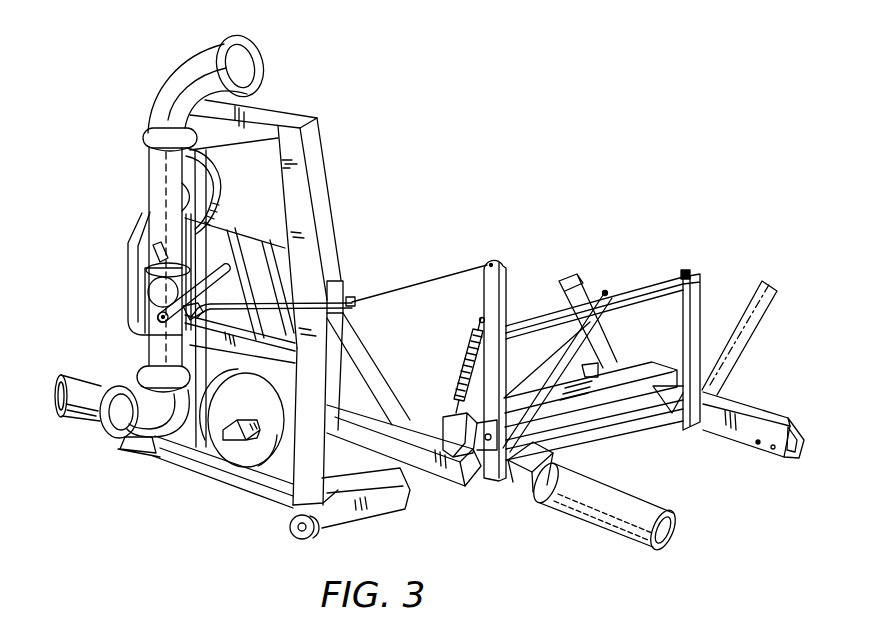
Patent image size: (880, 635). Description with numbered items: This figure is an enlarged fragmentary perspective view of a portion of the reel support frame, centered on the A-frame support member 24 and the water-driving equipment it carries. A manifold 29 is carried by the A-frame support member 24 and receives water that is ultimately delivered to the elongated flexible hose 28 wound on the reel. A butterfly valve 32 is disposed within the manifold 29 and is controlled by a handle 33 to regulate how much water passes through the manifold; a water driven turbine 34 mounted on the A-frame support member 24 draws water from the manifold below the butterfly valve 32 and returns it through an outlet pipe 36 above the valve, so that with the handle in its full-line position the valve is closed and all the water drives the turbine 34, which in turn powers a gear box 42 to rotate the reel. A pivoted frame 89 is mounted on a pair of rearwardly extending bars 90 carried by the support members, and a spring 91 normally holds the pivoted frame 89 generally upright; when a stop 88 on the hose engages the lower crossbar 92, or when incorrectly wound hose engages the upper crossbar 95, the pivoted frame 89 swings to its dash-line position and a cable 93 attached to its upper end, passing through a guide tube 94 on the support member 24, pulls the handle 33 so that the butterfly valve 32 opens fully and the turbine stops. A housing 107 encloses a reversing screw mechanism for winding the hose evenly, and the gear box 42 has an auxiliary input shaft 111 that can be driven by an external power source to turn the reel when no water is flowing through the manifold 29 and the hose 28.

The A-frame support member 24 is at (317, 160).
The flexible hose 28 is at (617, 530).
The manifold 29 is at (158, 233).
The butterfly valve 32 is at (145, 287).
The handle 33 is at (147, 268).
The water driven turbine 34 is at (217, 193).
The outlet pipe 36 is at (180, 198).
The gear box 42 is at (253, 458).
The stop 88 is at (525, 505).
The pivoted frame 89 is at (693, 270).
The rearwardly extending bars 90 is at (447, 472).
The spring 91 is at (467, 358).
The lower crossbar 92 is at (623, 437).
The cable 93 is at (453, 272).
The guide tube 94 is at (283, 300).
The upper crossbar 95 is at (653, 290).
The housing 107 is at (630, 373).
The auxiliary input shaft 111 is at (232, 440).